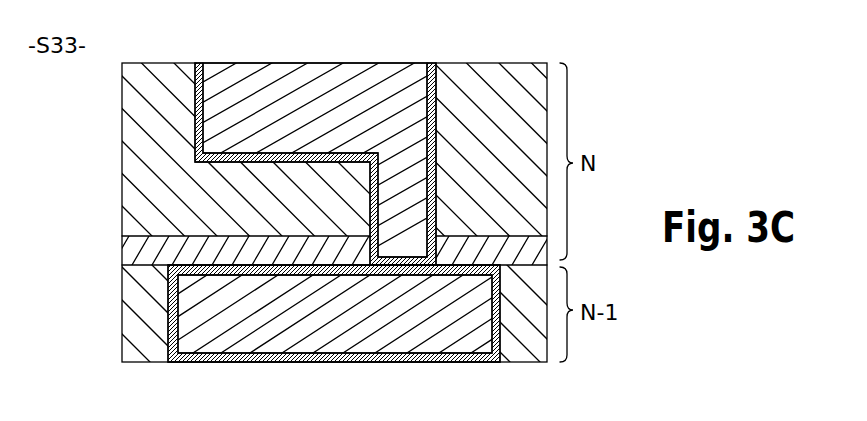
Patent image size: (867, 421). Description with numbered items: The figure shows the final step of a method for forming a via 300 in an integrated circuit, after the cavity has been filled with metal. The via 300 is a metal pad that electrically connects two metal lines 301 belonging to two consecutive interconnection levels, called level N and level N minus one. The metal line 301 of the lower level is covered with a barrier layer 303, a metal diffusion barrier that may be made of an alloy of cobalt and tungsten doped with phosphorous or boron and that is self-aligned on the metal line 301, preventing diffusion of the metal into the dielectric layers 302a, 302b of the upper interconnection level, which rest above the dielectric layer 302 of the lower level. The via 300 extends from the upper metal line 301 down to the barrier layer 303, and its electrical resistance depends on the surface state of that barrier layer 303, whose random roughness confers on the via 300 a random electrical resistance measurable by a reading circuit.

The via 300 is at (397, 213).
The metal line 301 is at (270, 92).
The dielectric layer 302 is at (143, 305).
The dielectric layer 302a is at (132, 250).
The dielectric layer 302b is at (148, 118).
The barrier layer 303 is at (463, 272).